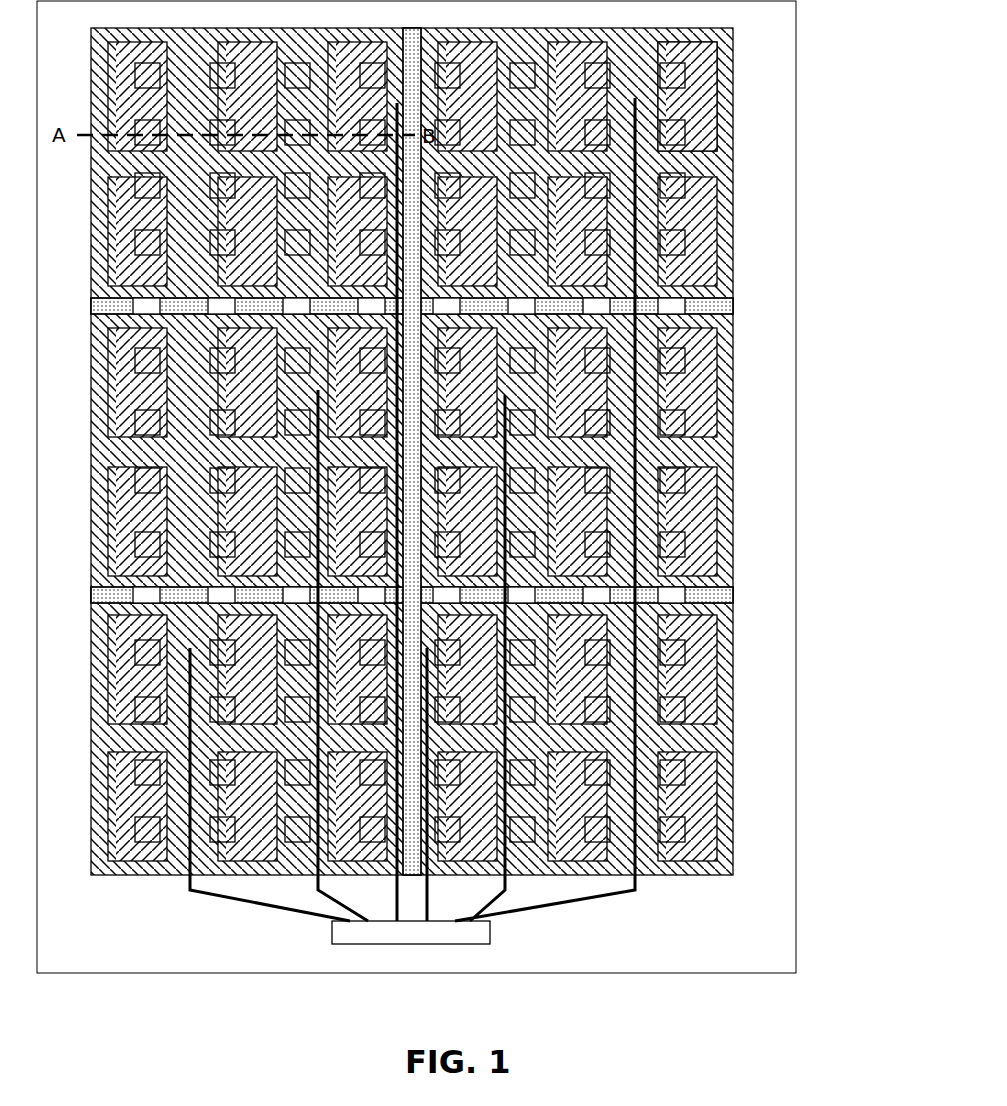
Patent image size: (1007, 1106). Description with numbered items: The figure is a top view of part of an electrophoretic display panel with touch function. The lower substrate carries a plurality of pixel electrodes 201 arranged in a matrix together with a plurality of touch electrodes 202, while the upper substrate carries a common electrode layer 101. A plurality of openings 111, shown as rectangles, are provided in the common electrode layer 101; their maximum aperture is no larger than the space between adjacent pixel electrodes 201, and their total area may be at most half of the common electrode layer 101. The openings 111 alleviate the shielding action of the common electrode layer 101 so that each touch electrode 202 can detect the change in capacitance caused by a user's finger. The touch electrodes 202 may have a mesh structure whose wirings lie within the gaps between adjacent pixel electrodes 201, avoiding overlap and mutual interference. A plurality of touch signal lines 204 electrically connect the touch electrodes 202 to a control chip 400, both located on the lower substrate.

The opening 111 is at (683, 60).
The touch electrode 202 is at (723, 177).
The pixel electrode 201 is at (715, 252).
The common electrode layer 101 is at (728, 305).
The touch signal line 204 is at (228, 898).
The control chip 400 is at (467, 935).